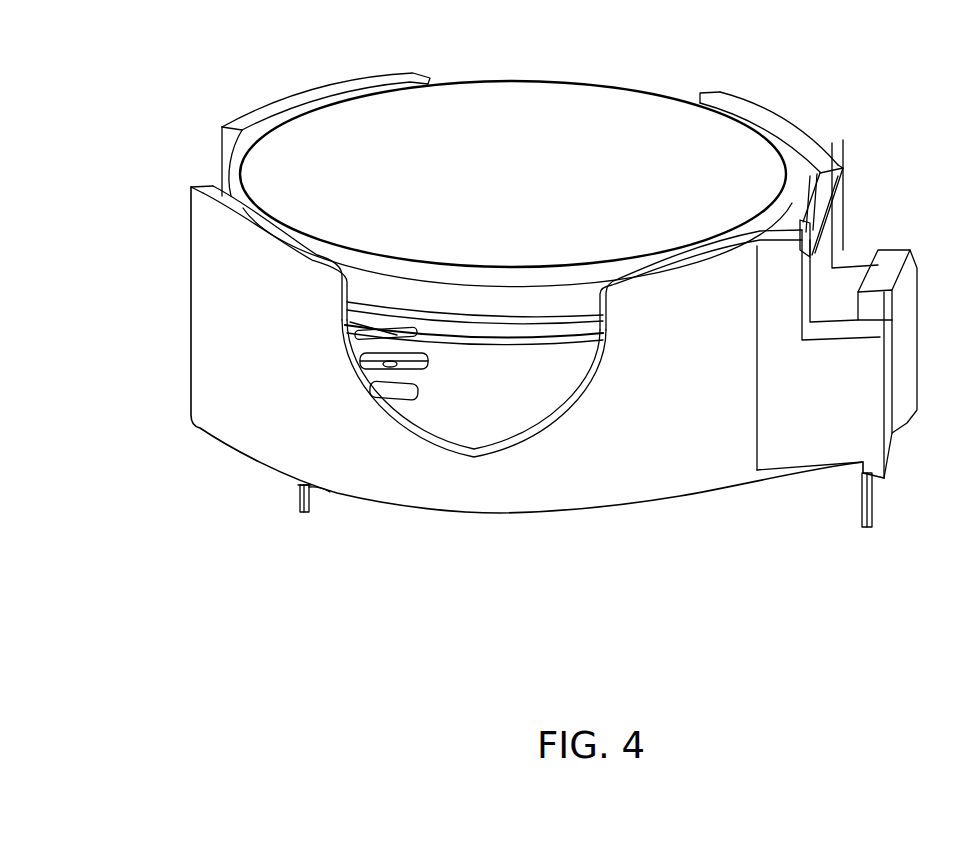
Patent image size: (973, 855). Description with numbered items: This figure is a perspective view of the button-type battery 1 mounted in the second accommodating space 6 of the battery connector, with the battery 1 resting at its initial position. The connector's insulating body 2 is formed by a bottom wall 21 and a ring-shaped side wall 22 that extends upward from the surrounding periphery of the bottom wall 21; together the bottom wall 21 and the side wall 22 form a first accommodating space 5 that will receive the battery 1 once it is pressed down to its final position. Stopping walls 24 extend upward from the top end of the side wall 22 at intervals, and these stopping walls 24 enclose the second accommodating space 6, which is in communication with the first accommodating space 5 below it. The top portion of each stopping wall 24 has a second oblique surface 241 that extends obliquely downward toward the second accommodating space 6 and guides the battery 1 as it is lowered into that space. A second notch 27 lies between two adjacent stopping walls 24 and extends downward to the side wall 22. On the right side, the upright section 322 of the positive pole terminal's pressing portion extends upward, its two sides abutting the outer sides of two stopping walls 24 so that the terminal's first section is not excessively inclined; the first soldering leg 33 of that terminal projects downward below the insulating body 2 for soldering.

The battery 1 is at (561, 84).
The insulating body 2 is at (731, 483).
The first accommodating space 5 is at (488, 373).
The second accommodating space 6 is at (808, 203).
The bottom wall 21 is at (275, 477).
The side wall 22 is at (539, 490).
The stopping wall 24 is at (232, 140).
The second notch 27 is at (437, 450).
The first soldering leg 33 is at (873, 505).
The second oblique surface 241 is at (332, 94).
The upright section 322 is at (828, 180).